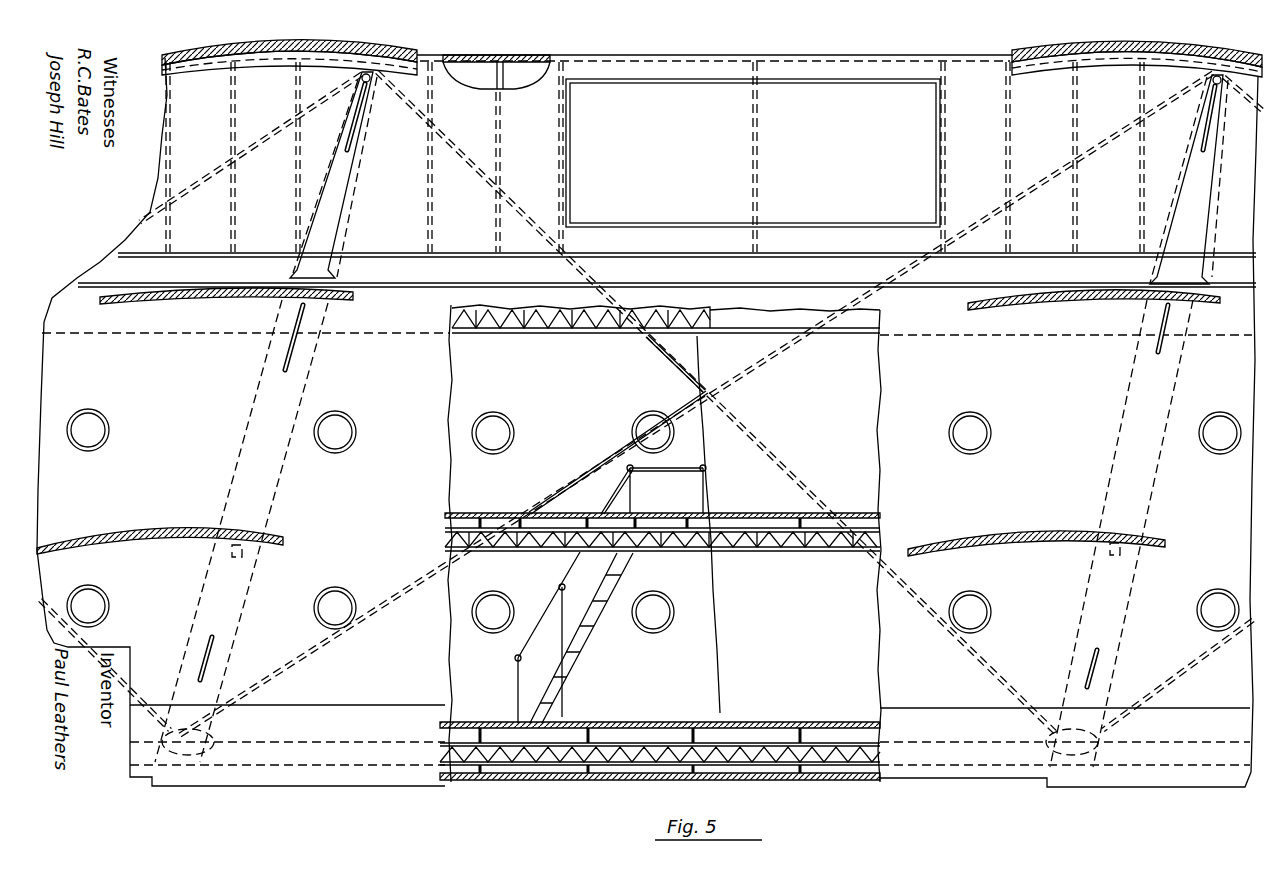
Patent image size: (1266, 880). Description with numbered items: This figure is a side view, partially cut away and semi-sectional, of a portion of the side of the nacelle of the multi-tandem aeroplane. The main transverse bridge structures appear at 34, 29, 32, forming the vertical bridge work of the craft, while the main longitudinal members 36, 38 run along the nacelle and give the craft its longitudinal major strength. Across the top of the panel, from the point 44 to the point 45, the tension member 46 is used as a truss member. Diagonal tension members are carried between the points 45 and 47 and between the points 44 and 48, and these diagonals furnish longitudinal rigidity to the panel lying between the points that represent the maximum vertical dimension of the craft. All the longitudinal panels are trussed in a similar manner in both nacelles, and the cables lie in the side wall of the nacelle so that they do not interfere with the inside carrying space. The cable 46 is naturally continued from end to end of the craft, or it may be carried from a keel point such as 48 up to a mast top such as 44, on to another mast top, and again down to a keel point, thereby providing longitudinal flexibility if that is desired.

The mast top point 44 is at (1223, 63).
The mast top point 45 is at (301, 54).
The tension member 46 is at (521, 60).
The main transverse bridge structure 34 is at (759, 178).
The main longitudinal member 36 is at (664, 543).
The main longitudinal member 38 is at (763, 519).
The main transverse bridge structure 29 is at (674, 533).
The main transverse bridge structure 32 is at (684, 496).
The keel point 48 is at (188, 742).
The keel point 47 is at (1072, 742).